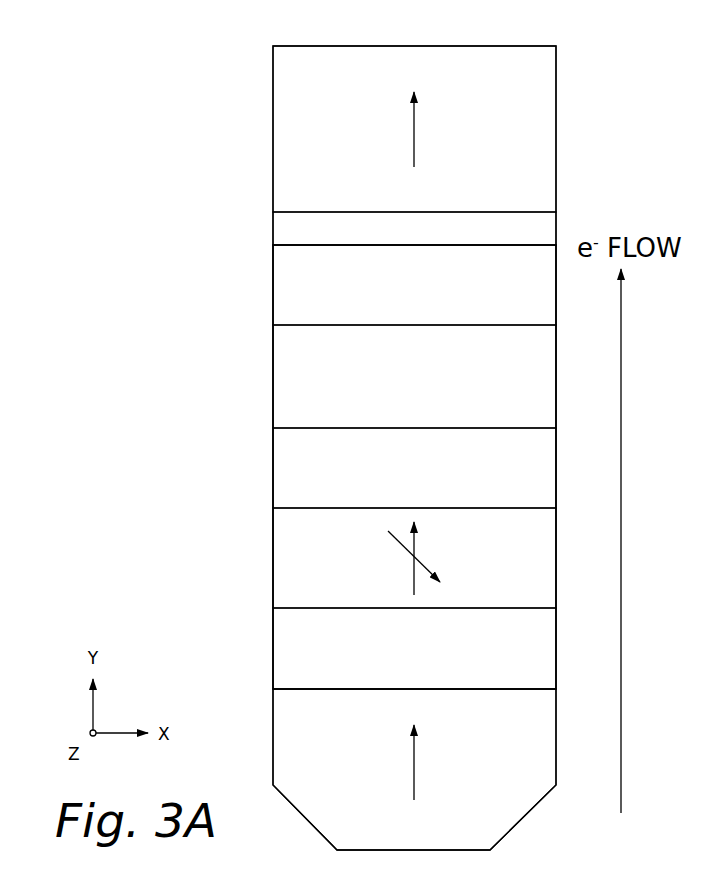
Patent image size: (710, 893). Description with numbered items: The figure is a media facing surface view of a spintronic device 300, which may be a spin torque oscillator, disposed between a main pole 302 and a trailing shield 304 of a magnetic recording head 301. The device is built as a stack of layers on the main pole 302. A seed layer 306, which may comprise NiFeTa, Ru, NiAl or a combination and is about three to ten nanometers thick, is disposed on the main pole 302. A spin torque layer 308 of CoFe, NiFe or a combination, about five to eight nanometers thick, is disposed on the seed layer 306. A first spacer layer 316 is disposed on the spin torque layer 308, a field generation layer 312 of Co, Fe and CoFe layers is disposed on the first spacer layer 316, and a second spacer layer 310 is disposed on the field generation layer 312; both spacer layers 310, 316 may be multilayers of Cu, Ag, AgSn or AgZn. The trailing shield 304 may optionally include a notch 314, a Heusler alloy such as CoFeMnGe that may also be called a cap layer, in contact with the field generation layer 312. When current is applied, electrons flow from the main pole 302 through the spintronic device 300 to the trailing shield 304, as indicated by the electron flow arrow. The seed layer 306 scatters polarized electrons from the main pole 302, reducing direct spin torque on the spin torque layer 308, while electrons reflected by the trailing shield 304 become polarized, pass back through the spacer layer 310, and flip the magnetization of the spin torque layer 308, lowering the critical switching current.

The magnetic recording head 301 is at (208, 125).
The spintronic device 300 is at (242, 245).
The main pole 302 is at (523, 777).
The trailing shield 304 is at (523, 145).
The seed layer 306 is at (431, 662).
The spin torque layer 308 is at (523, 573).
The second spacer layer 310 is at (431, 295).
The field generation layer 312 is at (431, 385).
The notch 314 is at (431, 239).
The first spacer layer 316 is at (431, 475).